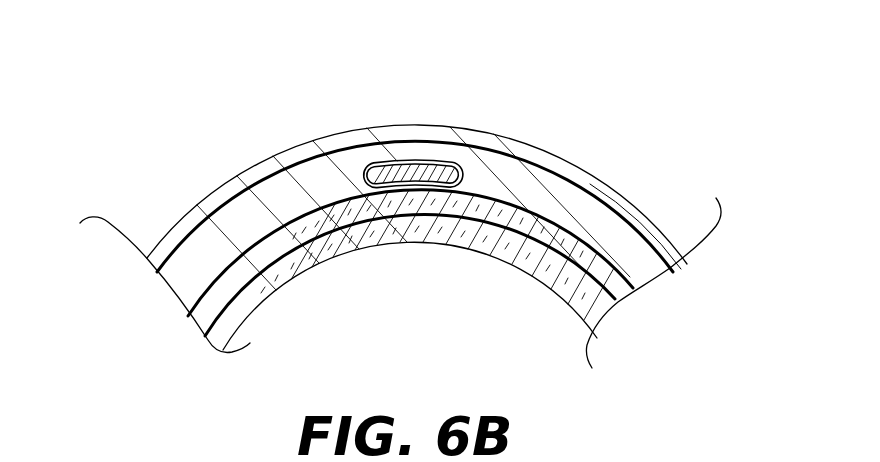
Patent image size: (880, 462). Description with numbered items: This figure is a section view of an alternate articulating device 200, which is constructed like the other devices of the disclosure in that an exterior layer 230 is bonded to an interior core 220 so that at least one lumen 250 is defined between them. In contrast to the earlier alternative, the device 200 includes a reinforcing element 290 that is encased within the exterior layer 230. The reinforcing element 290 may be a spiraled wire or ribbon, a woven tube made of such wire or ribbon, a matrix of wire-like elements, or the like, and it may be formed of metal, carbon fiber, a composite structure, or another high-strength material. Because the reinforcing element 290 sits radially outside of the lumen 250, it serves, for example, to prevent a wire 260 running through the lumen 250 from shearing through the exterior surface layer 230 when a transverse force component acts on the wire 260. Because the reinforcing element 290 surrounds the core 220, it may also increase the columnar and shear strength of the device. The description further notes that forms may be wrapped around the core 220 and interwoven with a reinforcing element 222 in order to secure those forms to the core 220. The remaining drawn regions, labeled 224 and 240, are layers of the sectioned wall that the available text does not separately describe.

The device 200 is at (549, 86).
The interior core 220 is at (589, 316).
The reinforcing element 222 is at (193, 314).
The display substrate layer 224 is at (313, 258).
The exterior layer 230 is at (605, 190).
The adhesive layer 240 is at (629, 282).
The lumen 250 is at (395, 158).
The wire 260 is at (432, 160).
The reinforcing element 290 is at (310, 155).